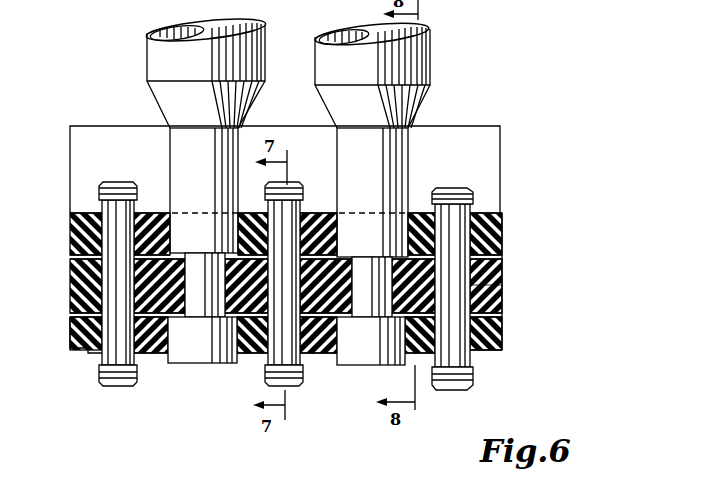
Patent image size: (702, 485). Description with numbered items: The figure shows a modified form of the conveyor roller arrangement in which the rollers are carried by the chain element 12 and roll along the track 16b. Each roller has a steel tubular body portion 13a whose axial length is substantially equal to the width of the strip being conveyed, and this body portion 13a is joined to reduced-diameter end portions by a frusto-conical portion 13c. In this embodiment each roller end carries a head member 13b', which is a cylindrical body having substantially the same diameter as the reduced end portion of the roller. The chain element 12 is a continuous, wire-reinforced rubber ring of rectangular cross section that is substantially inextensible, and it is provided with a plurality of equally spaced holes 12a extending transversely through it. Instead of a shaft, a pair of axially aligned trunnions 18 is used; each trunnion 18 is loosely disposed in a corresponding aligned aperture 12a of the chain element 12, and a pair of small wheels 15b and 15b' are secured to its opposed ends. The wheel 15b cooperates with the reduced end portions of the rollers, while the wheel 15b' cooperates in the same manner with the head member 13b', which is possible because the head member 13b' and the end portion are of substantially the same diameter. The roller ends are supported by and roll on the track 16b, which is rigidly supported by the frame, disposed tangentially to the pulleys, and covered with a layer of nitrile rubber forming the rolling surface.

The chain element 12 is at (502, 302).
The holes 12a is at (330, 266).
The tubular body portion 13a is at (243, 49).
The head member 13b' is at (277, 356).
The frusto-conical portion 13c is at (342, 98).
The small wheel 15b is at (313, 229).
The small wheel 15b' is at (315, 360).
The track 16b is at (443, 152).
The trunnion 18 is at (502, 276).